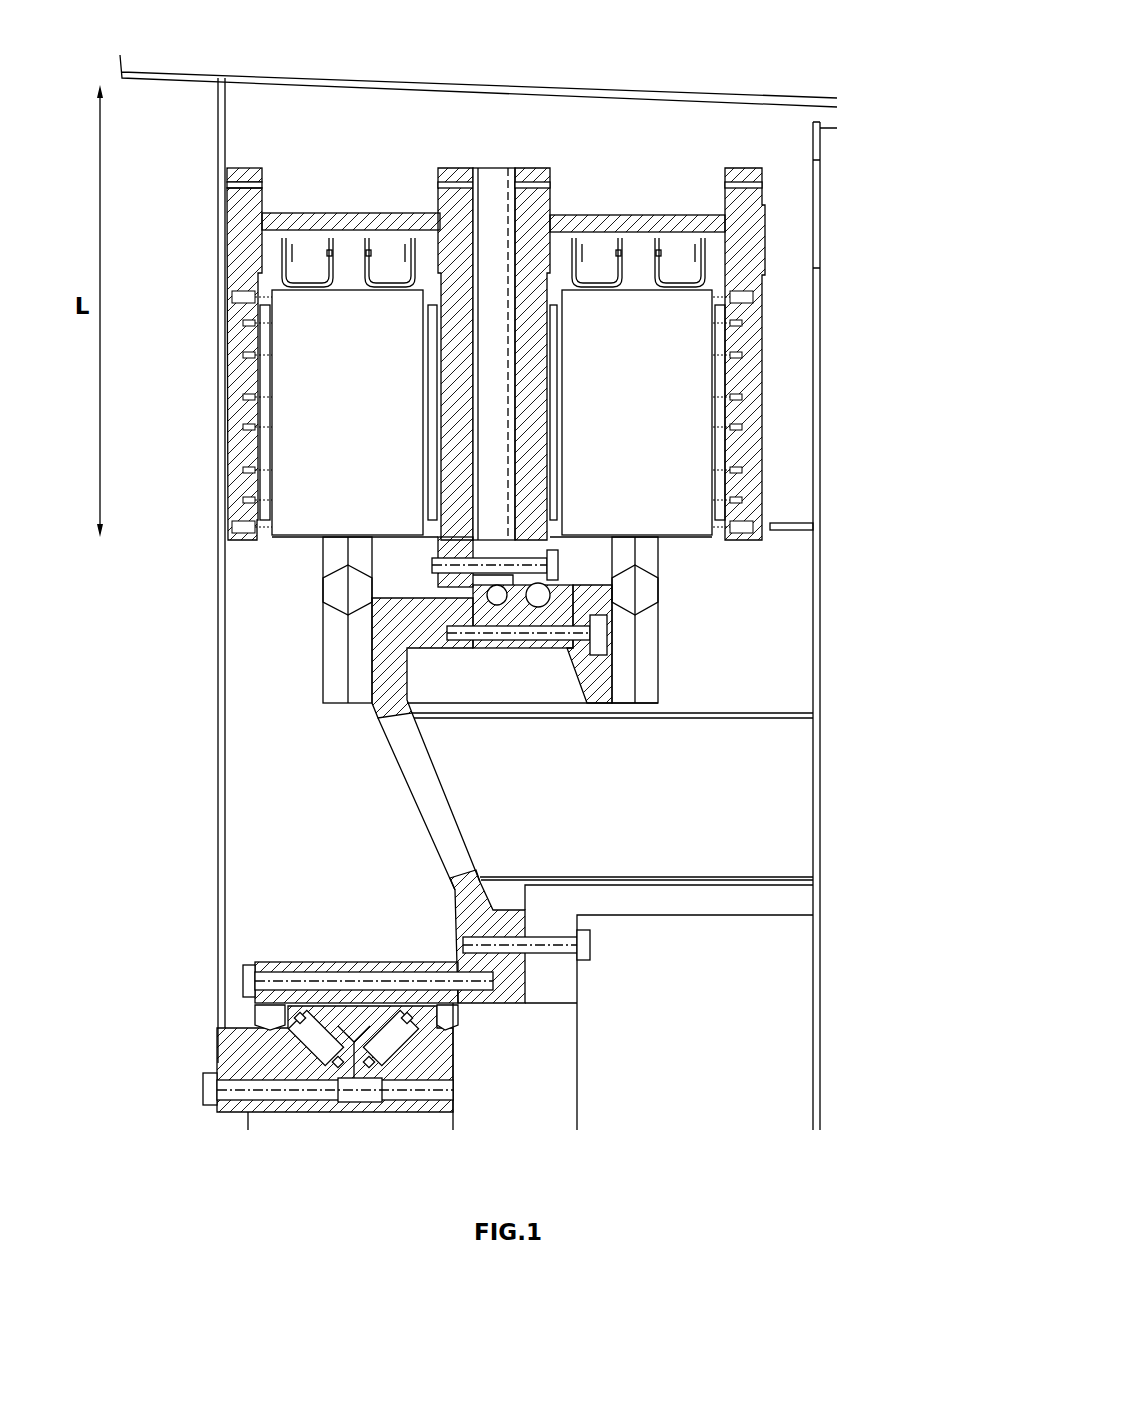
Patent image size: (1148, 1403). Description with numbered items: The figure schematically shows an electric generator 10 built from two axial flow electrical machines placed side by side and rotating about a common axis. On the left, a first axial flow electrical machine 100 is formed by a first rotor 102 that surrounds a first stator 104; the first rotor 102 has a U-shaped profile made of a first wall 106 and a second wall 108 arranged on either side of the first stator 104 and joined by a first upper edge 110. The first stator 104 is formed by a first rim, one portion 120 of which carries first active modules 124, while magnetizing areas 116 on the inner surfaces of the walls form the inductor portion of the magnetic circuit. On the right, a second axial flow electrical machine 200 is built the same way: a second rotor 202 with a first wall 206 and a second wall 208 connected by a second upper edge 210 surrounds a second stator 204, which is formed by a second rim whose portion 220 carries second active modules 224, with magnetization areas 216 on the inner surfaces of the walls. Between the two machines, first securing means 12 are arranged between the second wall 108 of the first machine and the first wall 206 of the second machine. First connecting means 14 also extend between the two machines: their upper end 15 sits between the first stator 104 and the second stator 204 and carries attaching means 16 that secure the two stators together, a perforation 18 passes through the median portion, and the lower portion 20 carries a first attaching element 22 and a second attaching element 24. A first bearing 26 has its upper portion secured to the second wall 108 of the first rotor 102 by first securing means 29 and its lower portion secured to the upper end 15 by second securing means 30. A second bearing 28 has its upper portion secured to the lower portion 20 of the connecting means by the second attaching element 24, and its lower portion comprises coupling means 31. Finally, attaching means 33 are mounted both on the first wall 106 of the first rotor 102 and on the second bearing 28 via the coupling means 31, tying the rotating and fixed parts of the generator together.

The electric generator 10 is at (870, 63).
The first securing means 12 is at (497, 190).
The first connecting means 14 is at (472, 800).
The upper end 15 is at (415, 592).
The attaching means 16 is at (420, 623).
The perforation 18 is at (444, 826).
The lower portion 20 is at (449, 929).
The first attaching element 22 is at (592, 950).
The second attaching element 24 is at (487, 1003).
The first bearing 26 is at (594, 598).
The second bearing 28 is at (471, 1072).
The first securing means 29 is at (556, 565).
The second securing means 30 is at (566, 633).
The coupling means 31 is at (296, 1087).
The attaching means 33 is at (220, 674).
The first axial flow electrical machine 100 is at (307, 288).
The first rotor 102 is at (226, 205).
The first stator 104 is at (333, 411).
The first wall 106 is at (240, 232).
The second wall 108 is at (447, 197).
The first upper edge 110 is at (318, 220).
The magnetizing areas 116 is at (430, 497).
The portion of first rim 120 is at (333, 677).
The first active modules 124 is at (303, 273).
The second axial flow electrical machine 200 is at (695, 290).
The second rotor 202 is at (768, 208).
The second stator 204 is at (622, 411).
The first wall 206 is at (540, 200).
The second wall 208 is at (755, 238).
The second upper edge 210 is at (668, 224).
The magnetization areas 216 is at (718, 497).
The portion of second rim 220 is at (658, 676).
The second active modules 224 is at (683, 275).